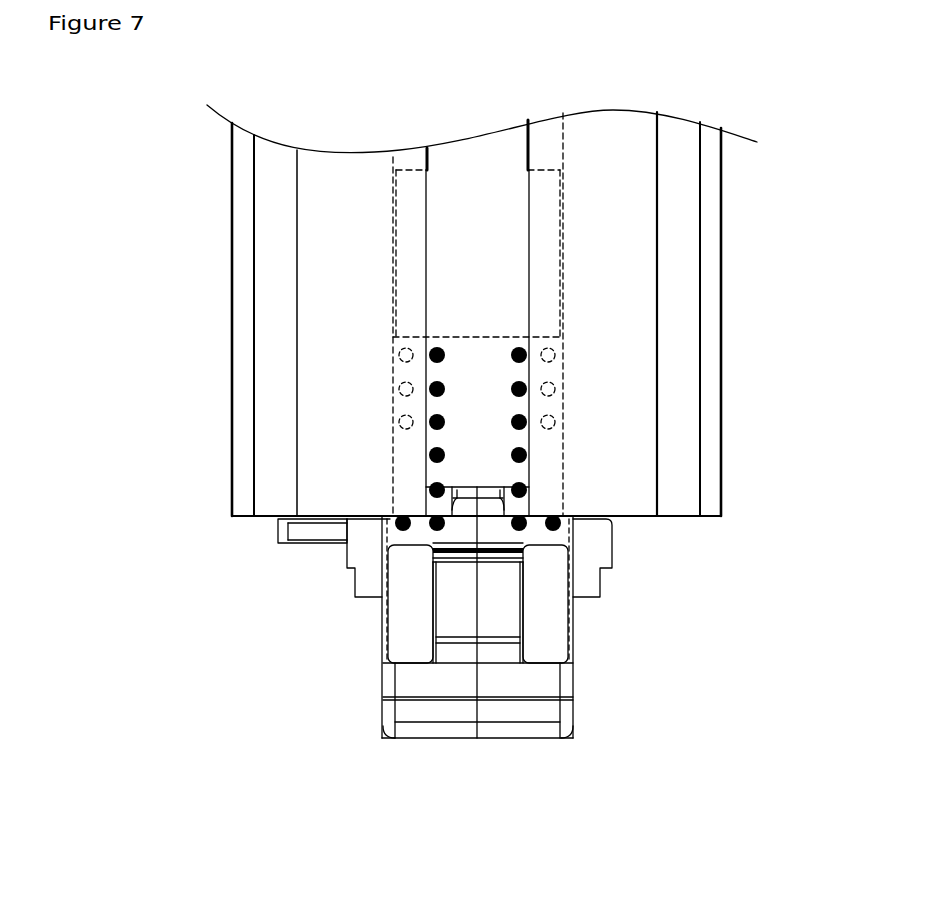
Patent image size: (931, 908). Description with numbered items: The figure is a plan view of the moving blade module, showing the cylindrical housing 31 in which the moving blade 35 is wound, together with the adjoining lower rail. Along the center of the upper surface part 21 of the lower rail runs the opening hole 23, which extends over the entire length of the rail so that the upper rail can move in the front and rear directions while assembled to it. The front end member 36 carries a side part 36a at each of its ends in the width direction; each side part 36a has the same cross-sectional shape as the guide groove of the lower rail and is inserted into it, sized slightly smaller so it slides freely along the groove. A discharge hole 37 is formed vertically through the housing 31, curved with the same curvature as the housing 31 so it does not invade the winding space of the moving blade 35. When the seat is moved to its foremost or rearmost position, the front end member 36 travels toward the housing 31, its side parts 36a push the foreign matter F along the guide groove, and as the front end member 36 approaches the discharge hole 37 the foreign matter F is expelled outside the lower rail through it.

The upper surface part 21 is at (327, 360).
The opening hole 23 is at (530, 198).
The front end member 36 is at (495, 238).
The side part 36a is at (545, 270).
The foreign matter F is at (530, 418).
The moving blade 35 is at (482, 472).
The discharge hole 37 is at (433, 543).
The housing 31 is at (490, 728).